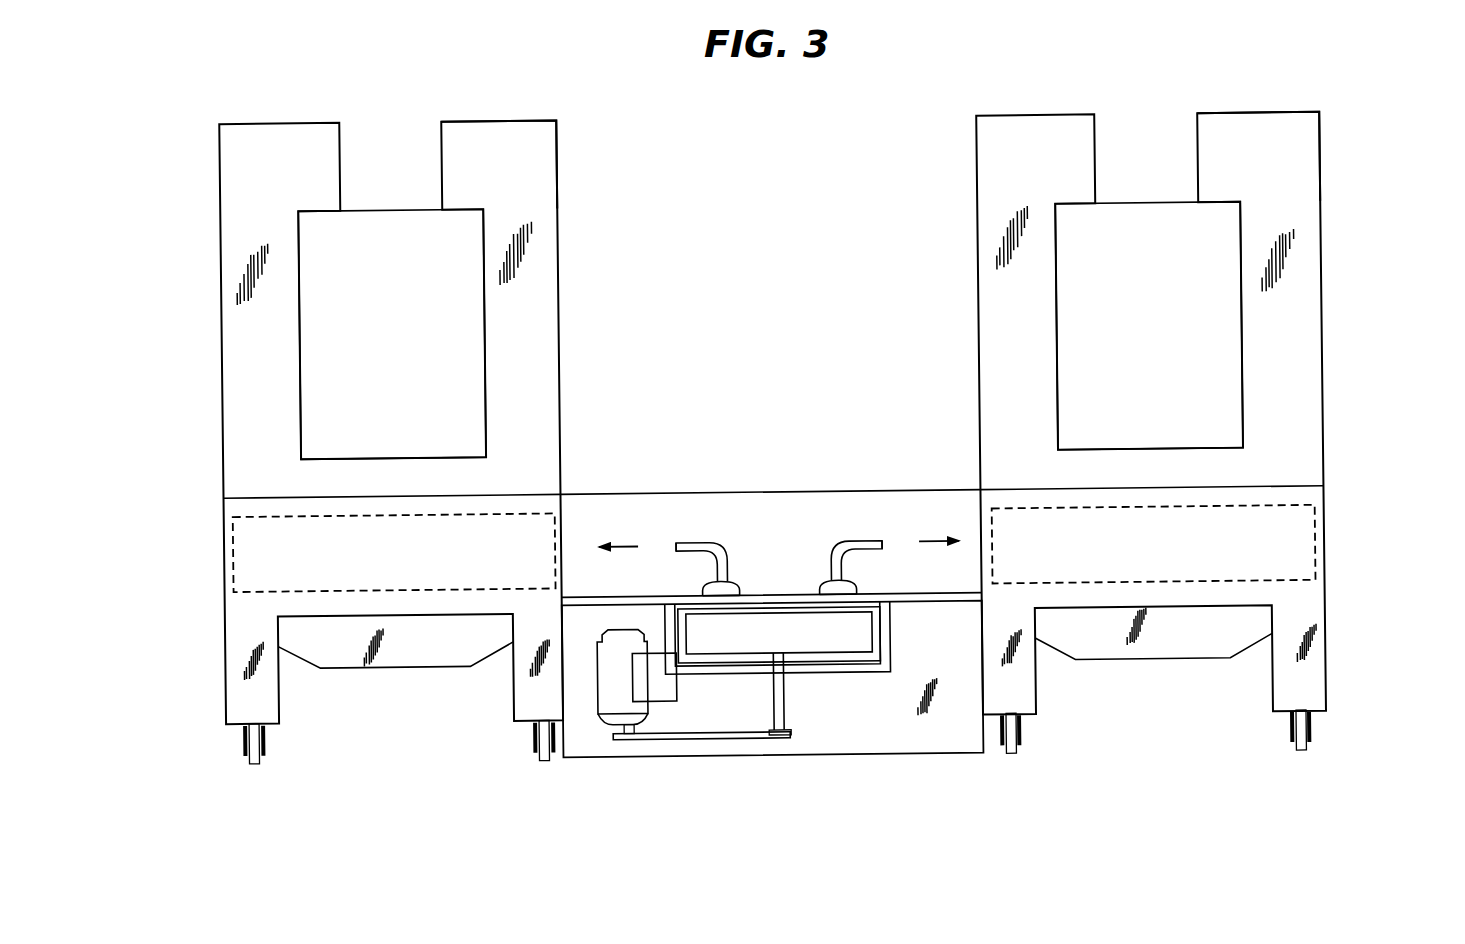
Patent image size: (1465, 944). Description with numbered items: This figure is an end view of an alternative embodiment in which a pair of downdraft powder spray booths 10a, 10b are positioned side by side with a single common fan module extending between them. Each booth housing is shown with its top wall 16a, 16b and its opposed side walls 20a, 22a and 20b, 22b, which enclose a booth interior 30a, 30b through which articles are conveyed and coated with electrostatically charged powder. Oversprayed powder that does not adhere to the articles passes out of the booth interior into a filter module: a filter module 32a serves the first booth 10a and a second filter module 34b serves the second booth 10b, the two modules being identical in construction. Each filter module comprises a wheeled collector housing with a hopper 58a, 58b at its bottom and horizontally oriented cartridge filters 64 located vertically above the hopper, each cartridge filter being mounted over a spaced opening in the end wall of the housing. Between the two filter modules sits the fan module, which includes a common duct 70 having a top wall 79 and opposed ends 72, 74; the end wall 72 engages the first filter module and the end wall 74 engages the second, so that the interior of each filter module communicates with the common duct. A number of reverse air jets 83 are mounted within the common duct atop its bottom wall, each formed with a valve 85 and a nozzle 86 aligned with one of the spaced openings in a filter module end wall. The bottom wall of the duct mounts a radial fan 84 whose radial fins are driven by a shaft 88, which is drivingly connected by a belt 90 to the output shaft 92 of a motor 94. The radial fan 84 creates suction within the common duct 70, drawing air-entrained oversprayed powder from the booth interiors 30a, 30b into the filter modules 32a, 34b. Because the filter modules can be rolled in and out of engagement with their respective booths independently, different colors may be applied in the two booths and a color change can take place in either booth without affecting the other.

The powder spray booth 10a is at (642, 175).
The powder spray booth 10b is at (895, 179).
The top wall 16a is at (509, 114).
The top wall 16b is at (1258, 114).
The side wall 20a is at (222, 314).
The side wall 20b is at (979, 312).
The side wall 22a is at (564, 316).
The side wall 22b is at (1324, 344).
The booth interior 30a is at (414, 320).
The booth interior 30b is at (1174, 320).
The filter module 32a is at (364, 737).
The filter module 34b is at (1362, 642).
The hopper 58a is at (414, 665).
The hopper 58b is at (1172, 663).
The cartridge filters 64 is at (504, 510).
The common duct 70 is at (810, 519).
The end wall 72 is at (565, 513).
The end wall 74 is at (977, 514).
The top wall 79 is at (764, 491).
The reverse air jets 83 is at (700, 522).
The radial fan 84 is at (865, 636).
The valve 85 is at (818, 580).
The nozzle 86 is at (686, 548).
The shaft 88 is at (785, 705).
The belt 90 is at (720, 740).
The output shaft 92 is at (636, 734).
The motor 94 is at (594, 708).